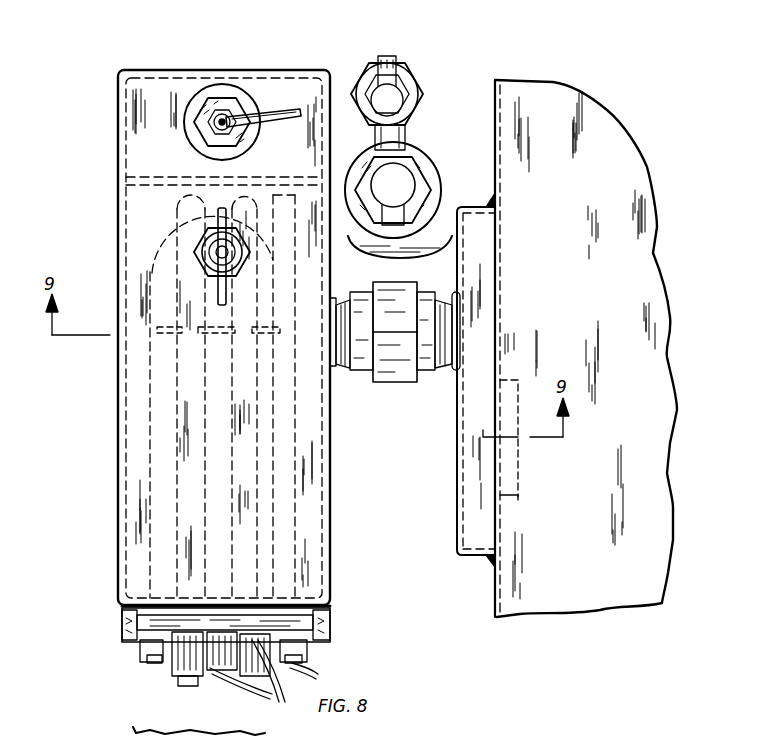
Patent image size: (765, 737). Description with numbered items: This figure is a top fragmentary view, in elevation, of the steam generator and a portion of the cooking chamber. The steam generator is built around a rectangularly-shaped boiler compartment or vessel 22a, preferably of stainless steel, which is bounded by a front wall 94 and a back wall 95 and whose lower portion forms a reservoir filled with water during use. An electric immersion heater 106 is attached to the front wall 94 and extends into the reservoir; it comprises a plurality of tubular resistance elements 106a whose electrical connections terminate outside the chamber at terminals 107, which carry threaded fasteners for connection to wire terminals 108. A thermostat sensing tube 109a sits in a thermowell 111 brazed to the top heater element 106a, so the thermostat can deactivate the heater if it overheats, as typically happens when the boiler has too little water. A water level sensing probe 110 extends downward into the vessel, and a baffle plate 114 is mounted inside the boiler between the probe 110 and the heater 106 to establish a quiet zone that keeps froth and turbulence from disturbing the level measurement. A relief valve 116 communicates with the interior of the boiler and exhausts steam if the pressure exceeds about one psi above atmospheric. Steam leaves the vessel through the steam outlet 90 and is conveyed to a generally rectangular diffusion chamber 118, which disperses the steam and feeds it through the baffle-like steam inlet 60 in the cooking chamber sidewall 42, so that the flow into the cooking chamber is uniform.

The boiler compartment 22a is at (118, 502).
The electric immersion heater 106 is at (165, 452).
The tubular resistance elements 106a is at (125, 375).
The baffle plate 114 is at (142, 178).
The back wall 95 is at (203, 72).
The water level sensing probe 110 is at (240, 107).
The relief valve 116 is at (188, 252).
The front wall 94 is at (335, 607).
The terminals 107 is at (180, 676).
The wire terminals 108 is at (205, 676).
The sensing tube 109a is at (282, 703).
The thermowell 111 is at (305, 655).
The steam outlet 90 is at (352, 368).
The sidewall 42 is at (500, 310).
The diffusion chamber 118 is at (478, 250).
The steam inlet 60 is at (505, 475).